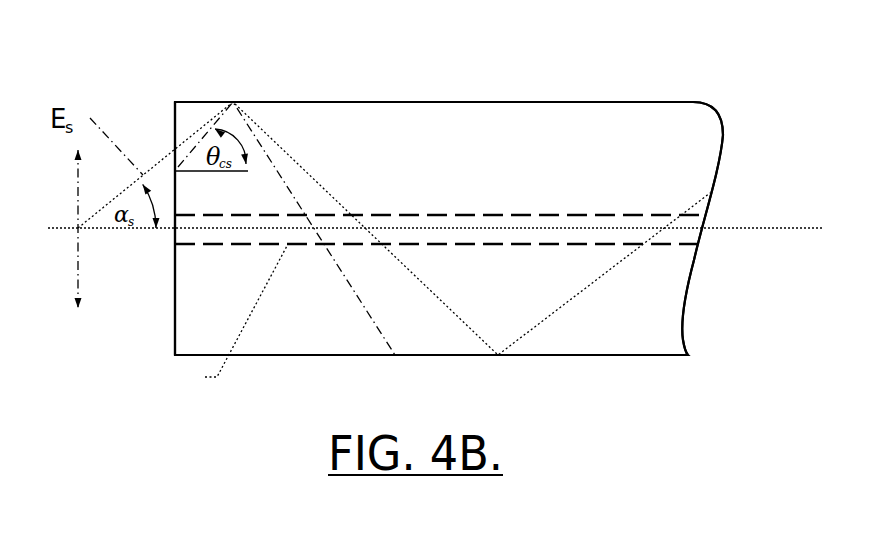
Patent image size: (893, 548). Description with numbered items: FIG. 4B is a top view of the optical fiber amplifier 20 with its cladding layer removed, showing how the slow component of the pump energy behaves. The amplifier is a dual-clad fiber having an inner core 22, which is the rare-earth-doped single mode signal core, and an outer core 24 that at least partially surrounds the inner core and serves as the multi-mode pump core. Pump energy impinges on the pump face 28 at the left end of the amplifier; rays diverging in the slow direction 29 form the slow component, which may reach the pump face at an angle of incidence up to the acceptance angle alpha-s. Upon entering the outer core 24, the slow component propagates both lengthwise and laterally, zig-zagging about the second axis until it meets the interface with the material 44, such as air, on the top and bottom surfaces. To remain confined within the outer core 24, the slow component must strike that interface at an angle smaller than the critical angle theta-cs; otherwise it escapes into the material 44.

The optical fiber amplifier 20 is at (437, 43).
The inner core 22 is at (227, 317).
The outer core 24 is at (723, 152).
The pump face 28 is at (173, 132).
The slow direction 29 is at (77, 272).
The material 44 is at (461, 92).